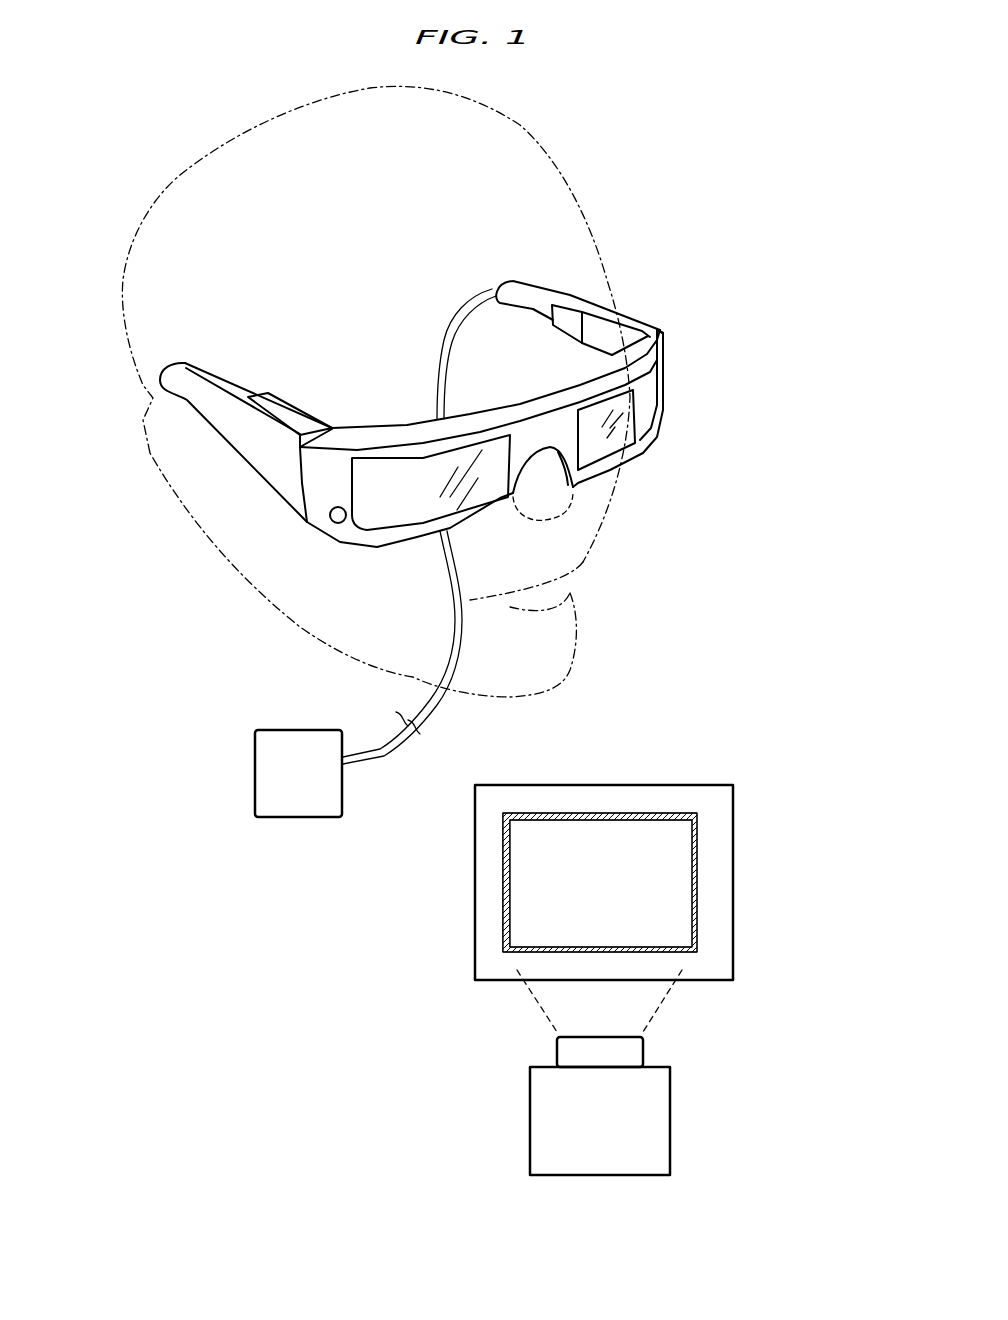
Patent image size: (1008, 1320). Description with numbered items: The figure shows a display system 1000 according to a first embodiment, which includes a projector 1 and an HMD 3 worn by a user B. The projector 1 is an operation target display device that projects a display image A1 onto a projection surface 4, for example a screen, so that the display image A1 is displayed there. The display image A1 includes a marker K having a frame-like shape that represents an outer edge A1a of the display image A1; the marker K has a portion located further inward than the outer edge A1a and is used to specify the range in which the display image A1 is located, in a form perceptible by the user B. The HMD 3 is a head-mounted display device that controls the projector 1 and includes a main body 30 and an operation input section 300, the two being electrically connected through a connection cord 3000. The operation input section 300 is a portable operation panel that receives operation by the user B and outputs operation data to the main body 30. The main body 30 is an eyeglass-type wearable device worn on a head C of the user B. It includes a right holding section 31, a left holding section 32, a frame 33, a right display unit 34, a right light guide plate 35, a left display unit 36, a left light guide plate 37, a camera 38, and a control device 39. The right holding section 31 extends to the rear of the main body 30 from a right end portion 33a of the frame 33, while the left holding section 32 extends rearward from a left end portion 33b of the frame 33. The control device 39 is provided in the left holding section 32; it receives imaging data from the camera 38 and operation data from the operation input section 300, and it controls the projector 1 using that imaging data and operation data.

The display system 1000 is at (754, 145).
The HMD 3 is at (208, 601).
The main body 30 is at (395, 405).
The right holding section 31 is at (188, 343).
The left holding section 32 is at (574, 282).
The frame 33 is at (643, 345).
The right end portion 33a is at (300, 492).
The left end portion 33b is at (662, 340).
The right display unit 34 is at (290, 417).
The right light guide plate 35 is at (410, 517).
The left display unit 36 is at (600, 310).
The left light guide plate 37 is at (640, 422).
The camera 38 is at (338, 524).
The control device 39 is at (563, 328).
The operation input section 300 is at (306, 731).
The connection cord 3000 is at (383, 752).
The projection surface 4 is at (589, 862).
The display image A1 is at (607, 827).
The outer edge A1a is at (505, 927).
The marker K is at (503, 873).
The projector 1 is at (603, 1177).
The user B is at (610, 527).
The head C is at (140, 290).